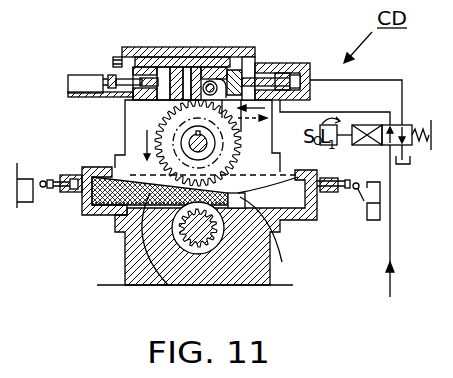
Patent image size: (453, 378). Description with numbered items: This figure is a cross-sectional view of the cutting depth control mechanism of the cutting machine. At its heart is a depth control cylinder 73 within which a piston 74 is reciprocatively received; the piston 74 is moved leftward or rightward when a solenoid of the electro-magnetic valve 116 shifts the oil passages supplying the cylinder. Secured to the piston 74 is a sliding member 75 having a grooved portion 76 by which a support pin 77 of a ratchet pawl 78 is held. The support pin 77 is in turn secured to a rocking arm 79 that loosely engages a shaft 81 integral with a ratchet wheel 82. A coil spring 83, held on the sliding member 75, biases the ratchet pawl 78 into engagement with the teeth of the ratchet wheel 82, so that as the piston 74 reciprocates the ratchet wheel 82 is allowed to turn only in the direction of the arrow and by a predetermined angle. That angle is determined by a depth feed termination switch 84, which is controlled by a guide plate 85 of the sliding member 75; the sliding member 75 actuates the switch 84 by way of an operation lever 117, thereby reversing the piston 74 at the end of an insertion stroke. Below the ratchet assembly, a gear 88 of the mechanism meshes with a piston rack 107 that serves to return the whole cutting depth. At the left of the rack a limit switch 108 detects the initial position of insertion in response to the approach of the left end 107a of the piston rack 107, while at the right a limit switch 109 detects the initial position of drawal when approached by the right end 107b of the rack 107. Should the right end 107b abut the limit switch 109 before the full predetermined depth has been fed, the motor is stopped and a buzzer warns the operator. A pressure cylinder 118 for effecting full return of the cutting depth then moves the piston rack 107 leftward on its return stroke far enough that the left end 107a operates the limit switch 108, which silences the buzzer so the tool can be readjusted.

The depth control cylinder 73 is at (288, 73).
The piston 74 is at (279, 75).
The sliding member 75 is at (248, 58).
The grooved portion 76 is at (233, 70).
The support pin 77 is at (212, 81).
The ratchet pawl 78 is at (197, 72).
The rocking arm 79 is at (175, 111).
The shaft 81 is at (207, 145).
The ratchet wheel 82 is at (147, 133).
The coil spring 83 is at (165, 70).
The depth feed termination switch 84 is at (78, 82).
The guide plate 85 is at (143, 79).
The gear 88 is at (203, 240).
The piston rack 107 is at (105, 207).
The left end of the piston rack 107a is at (88, 198).
The right end of the piston rack 107b is at (230, 231).
The limit switch 108 is at (30, 183).
The limit switch 109 is at (372, 212).
The electro-magnetic valve 116 is at (375, 144).
The operation lever 117 is at (110, 80).
The pressure cylinder 118 is at (78, 176).